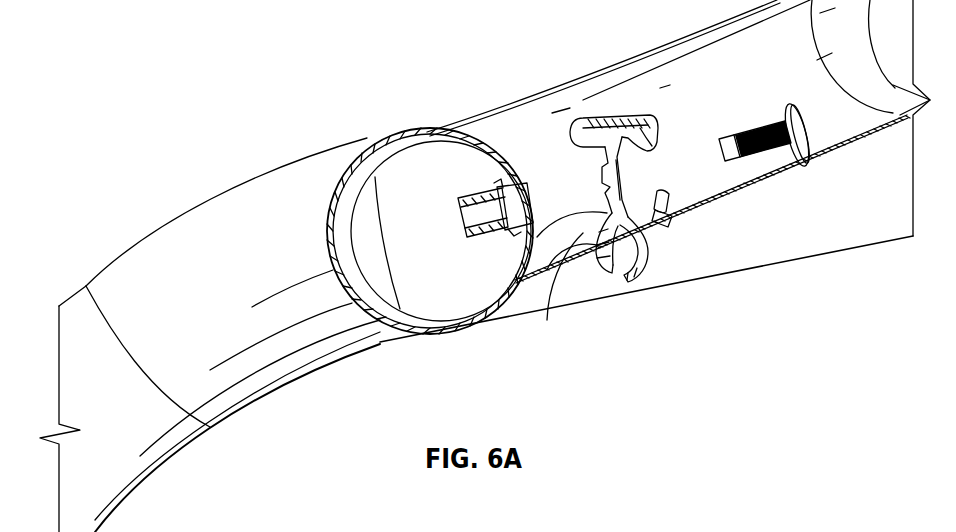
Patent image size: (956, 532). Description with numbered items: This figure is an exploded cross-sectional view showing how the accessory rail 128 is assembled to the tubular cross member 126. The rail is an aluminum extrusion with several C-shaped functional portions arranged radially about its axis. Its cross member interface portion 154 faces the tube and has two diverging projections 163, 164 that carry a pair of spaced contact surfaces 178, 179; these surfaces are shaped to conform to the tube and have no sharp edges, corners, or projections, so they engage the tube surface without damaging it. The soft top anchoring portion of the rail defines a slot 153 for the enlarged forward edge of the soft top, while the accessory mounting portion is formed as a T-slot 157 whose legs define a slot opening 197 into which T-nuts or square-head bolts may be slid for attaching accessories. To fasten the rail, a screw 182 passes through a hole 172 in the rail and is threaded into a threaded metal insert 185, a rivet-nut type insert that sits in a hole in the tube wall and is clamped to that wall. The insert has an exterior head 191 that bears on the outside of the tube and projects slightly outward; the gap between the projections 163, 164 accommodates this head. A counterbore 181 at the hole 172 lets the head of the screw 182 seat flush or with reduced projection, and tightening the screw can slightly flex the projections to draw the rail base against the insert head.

The tubular cross member 126 is at (417, 130).
The cross member interface portion 154 is at (497, 130).
The threaded metal insert 185 is at (490, 240).
The contact surface 179 is at (556, 158).
The projection 164 is at (580, 122).
The counterbore 181 is at (660, 125).
The exterior head 191 is at (530, 205).
The slot 153 is at (617, 275).
The projection 163 is at (603, 272).
The accessory rail 128 is at (663, 222).
The T-slot 157 is at (705, 193).
The hole 172 is at (550, 275).
The contact surface 178 is at (548, 250).
The slot opening 197 is at (650, 158).
The screw 182 is at (810, 150).